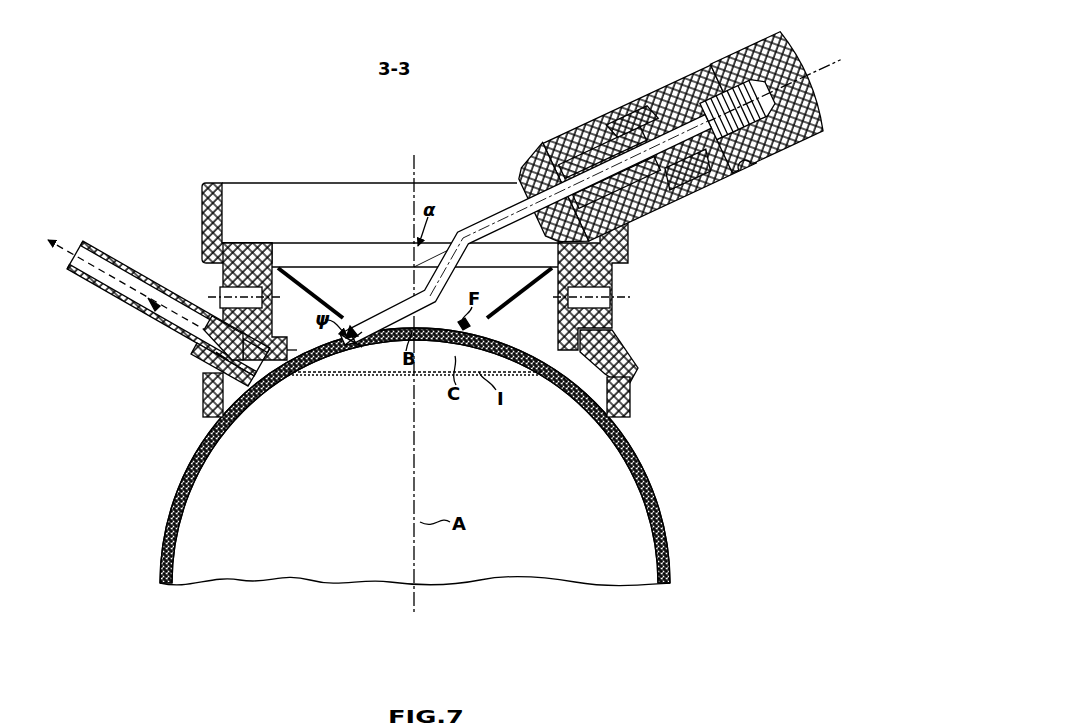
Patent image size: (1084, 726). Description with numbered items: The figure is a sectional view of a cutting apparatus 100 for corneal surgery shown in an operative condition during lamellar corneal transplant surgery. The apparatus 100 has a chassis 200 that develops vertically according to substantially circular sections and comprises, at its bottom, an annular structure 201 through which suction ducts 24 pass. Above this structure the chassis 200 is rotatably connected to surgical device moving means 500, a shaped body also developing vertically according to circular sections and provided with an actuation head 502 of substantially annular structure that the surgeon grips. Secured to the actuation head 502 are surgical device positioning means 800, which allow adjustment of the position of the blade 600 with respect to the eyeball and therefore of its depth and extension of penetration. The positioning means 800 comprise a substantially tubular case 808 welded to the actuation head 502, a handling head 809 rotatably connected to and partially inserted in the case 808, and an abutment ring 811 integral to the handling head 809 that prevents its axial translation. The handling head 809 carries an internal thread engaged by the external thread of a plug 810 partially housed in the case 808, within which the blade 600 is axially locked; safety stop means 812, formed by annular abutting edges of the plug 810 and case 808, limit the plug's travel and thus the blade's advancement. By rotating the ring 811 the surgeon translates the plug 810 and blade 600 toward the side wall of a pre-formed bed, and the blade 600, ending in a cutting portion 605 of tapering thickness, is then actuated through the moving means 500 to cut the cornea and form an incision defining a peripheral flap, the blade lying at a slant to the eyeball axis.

The cutting apparatus 100 is at (126, 157).
The suction ducts 24 is at (128, 306).
The chassis 200 is at (198, 386).
The annular structure 201 is at (203, 408).
The surgical device moving means 500 is at (192, 271).
The actuation head 502 is at (203, 226).
The blade 600 is at (453, 236).
The cutting portion 605 is at (388, 342).
The surgical device positioning means 800 is at (731, 186).
The tubular case 808 is at (553, 145).
The handling head 809 is at (800, 140).
The plug 810 is at (583, 120).
The abutment ring 811 is at (680, 197).
The safety stop means 812 is at (552, 170).